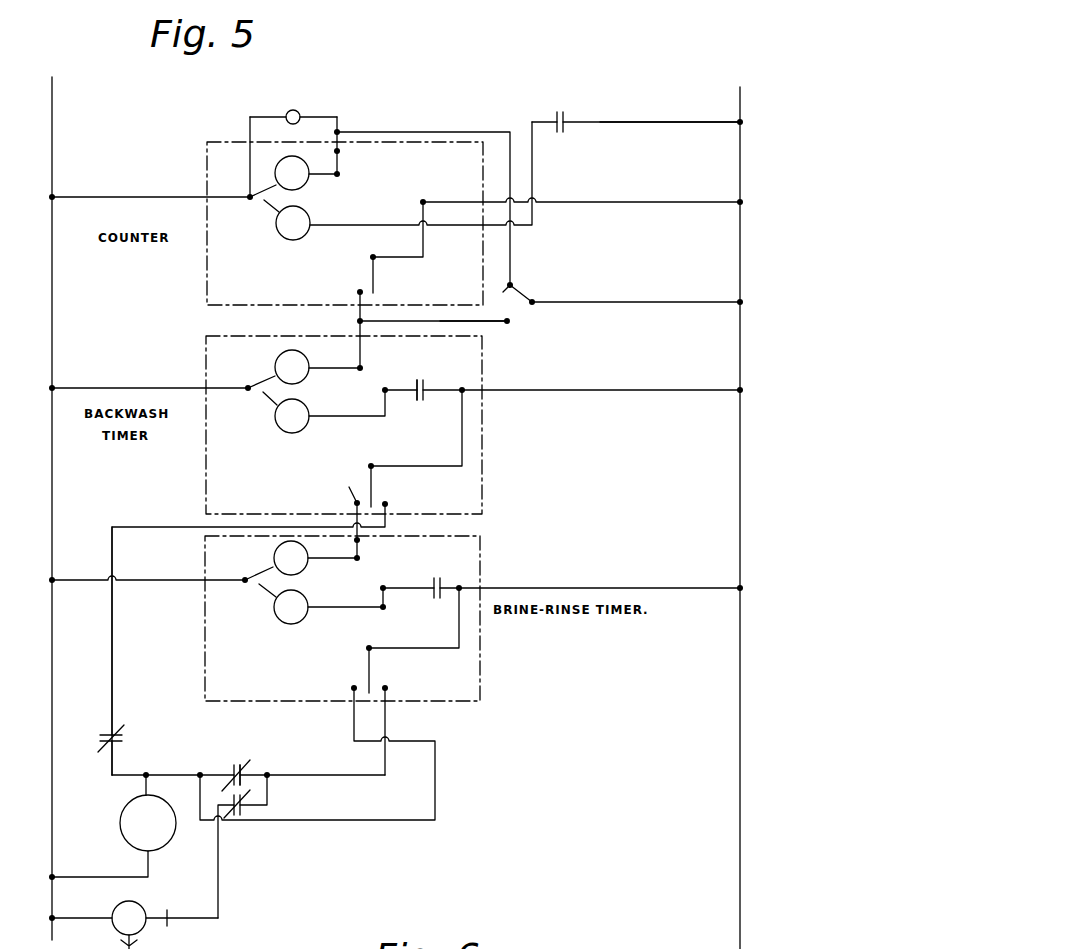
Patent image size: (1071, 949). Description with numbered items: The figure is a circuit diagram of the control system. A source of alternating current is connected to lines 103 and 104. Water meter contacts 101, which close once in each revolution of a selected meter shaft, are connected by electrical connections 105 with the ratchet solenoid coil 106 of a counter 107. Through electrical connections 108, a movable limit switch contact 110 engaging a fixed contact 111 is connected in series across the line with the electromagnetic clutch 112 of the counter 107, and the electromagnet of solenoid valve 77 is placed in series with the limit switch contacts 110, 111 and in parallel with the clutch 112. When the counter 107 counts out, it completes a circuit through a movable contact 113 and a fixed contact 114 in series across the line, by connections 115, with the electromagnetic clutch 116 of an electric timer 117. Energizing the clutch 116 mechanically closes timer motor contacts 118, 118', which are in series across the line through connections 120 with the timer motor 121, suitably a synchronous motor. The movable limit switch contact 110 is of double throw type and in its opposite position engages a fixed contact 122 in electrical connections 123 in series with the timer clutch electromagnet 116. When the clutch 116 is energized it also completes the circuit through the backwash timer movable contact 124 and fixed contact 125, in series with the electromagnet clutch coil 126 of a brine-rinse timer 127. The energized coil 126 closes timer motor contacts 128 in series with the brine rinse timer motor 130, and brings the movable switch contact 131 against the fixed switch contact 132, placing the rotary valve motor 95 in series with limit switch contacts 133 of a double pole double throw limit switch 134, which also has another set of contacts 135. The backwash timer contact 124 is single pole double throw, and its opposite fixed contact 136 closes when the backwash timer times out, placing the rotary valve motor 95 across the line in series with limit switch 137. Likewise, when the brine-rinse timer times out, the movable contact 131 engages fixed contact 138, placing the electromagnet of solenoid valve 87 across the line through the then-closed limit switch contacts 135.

The line 103 is at (52, 90).
The line 104 is at (740, 92).
The solenoid valve 77 is at (299, 100).
The electromagnetic clutch 112 is at (275, 163).
The ratchet solenoid coil 106 is at (278, 239).
The counter 107 is at (264, 200).
The water meter contacts 101 is at (583, 101).
The electrical connections 105 is at (668, 114).
The connections 115 is at (633, 203).
The electrical connections 108 is at (620, 305).
The fixed contact 111 is at (513, 282).
The movable limit switch contact 110 is at (518, 291).
The movable contact 113 is at (378, 273).
The fixed contact 114 is at (360, 290).
The fixed contact 122 is at (507, 321).
The electrical connections 123 is at (465, 323).
The electromagnetic clutch 116 is at (276, 356).
The timer motor 121 is at (305, 429).
The electric timer 117 is at (263, 395).
The timer motor contacts 118 is at (424, 374).
The timer motor contact 118' is at (412, 373).
The connections 120 is at (651, 381).
The backwash timer movable contact 124 is at (383, 483).
The fixed contact 125 is at (356, 501).
The fixed contact 136 is at (385, 504).
The electromagnet clutch coil 126 is at (274, 555).
The brine rinse timer motor 130 is at (303, 620).
The brine-rinse timer 127 is at (265, 583).
The timer motor contacts 128 is at (448, 560).
The movable switch contact 131 is at (369, 667).
The fixed switch contact 132 is at (354, 688).
The fixed contact 138 is at (385, 688).
The limit switch 137 is at (180, 721).
The limit switch contacts 133 is at (242, 758).
The limit switch 134 is at (240, 790).
The limit switch contacts 135 is at (244, 810).
The rotary valve motor 95 is at (122, 812).
The solenoid valve 87 is at (140, 905).